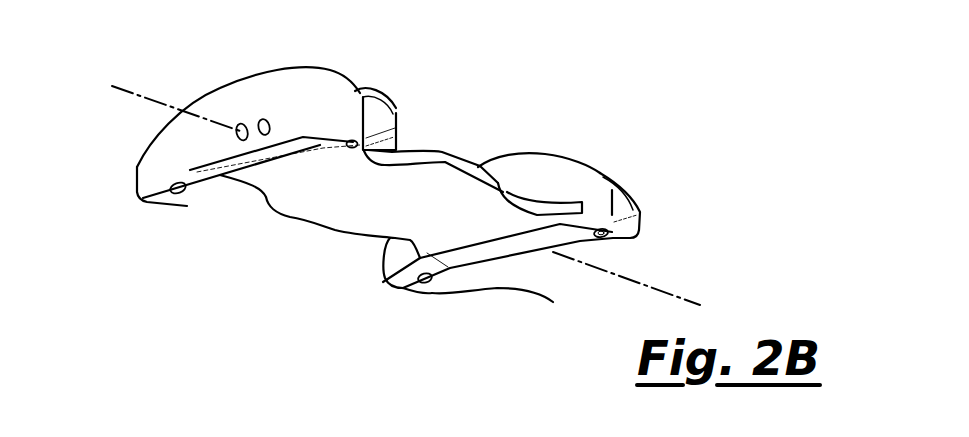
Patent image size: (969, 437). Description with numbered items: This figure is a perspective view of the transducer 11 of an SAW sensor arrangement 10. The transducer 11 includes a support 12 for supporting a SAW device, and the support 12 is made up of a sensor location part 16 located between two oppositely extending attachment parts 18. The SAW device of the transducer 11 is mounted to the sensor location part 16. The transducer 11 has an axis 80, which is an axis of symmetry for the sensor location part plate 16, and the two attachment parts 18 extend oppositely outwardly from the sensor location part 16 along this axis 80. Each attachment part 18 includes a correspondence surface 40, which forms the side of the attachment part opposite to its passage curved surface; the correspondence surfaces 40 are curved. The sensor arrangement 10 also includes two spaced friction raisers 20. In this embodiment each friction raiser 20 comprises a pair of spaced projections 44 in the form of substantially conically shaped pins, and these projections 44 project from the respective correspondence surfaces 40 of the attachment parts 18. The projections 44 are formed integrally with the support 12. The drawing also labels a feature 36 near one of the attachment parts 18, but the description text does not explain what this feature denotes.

The SAW sensor arrangement 10 is at (662, 110).
The transducer 11 is at (620, 180).
The support 12 is at (512, 153).
The sensor location part 16 is at (355, 220).
The attachment part 18 is at (240, 103).
The friction raiser 20 is at (393, 242).
The tab 36 is at (394, 103).
The correspondence surface 40 is at (193, 183).
The projection 44 is at (355, 143).
The axis 80 is at (647, 290).